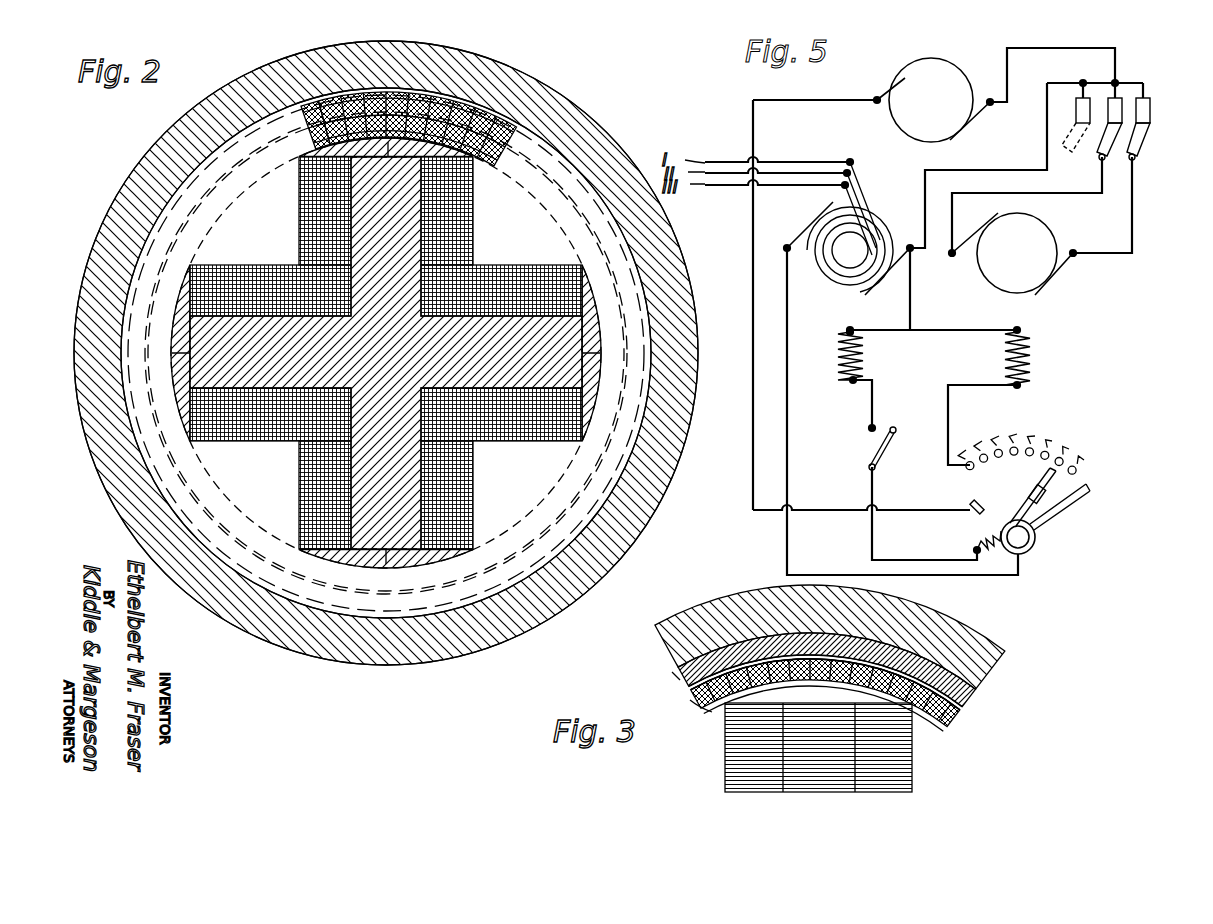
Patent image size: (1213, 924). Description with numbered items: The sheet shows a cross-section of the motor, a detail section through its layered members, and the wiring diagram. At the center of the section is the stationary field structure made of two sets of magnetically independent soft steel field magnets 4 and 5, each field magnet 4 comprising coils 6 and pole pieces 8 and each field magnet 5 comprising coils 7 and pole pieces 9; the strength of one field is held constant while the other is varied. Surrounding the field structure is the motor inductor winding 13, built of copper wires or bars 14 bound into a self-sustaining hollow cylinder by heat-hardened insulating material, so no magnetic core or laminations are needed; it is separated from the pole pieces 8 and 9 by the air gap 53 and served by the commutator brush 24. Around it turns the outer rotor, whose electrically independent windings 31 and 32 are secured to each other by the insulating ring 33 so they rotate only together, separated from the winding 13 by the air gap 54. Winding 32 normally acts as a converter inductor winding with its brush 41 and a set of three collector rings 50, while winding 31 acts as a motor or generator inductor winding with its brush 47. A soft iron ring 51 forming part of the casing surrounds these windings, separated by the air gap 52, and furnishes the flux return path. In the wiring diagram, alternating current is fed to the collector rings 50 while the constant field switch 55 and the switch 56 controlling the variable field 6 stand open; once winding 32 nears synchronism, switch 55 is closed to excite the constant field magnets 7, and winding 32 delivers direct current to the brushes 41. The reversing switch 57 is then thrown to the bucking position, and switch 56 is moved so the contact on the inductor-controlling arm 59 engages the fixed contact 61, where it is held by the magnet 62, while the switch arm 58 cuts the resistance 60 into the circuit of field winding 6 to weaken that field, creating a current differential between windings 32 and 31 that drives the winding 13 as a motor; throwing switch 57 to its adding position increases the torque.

In FIG. 2, the field magnet 4 is at (262, 327).
In FIG. 3, the field magnet 5 is at (726, 746).
In FIG. 2, the coils 6 is at (299, 200).
In FIG. 5, the coils 6 is at (1030, 360).
In FIG. 5, the coils 7 is at (836, 362).
In FIG. 3, the coils 7 is at (914, 744).
In FIG. 2, the pole pieces 8 is at (420, 150).
In FIG. 3, the pole pieces 9 is at (950, 698).
In FIG. 2, the motor inductor winding 13 is at (495, 130).
In FIG. 5, the motor inductor winding 13 is at (931, 100).
In FIG. 3, the motor inductor winding 13 is at (956, 684).
In FIG. 2, the copper wires or bars 14 is at (350, 113).
In FIG. 3, the copper wires or bars 14 is at (694, 700).
In FIG. 5, the commutator brush 24 is at (975, 112).
In FIG. 2, the inductor winding 31 is at (400, 126).
In FIG. 5, the inductor winding 31 is at (1048, 228).
In FIG. 5, the inductor winding 32 is at (862, 232).
In FIG. 3, the insulating ring 33 is at (672, 672).
In FIG. 5, the brush 41 is at (900, 276).
In FIG. 5, the brush 47 is at (1063, 270).
In FIG. 5, the collector rings 50 is at (842, 266).
In FIG. 2, the ring 51 is at (577, 114).
In FIG. 3, the ring 51 is at (722, 604).
In FIG. 2, the air gap 52 is at (472, 108).
In FIG. 3, the air gap 52 is at (945, 662).
In FIG. 2, the air gap 53 is at (413, 137).
In FIG. 3, the air gap 53 is at (904, 645).
In FIG. 2, the air gap 54 is at (367, 118).
In FIG. 3, the air gap 54 is at (950, 712).
In FIG. 5, the constant field switch 55 is at (892, 440).
In FIG. 5, the switch 56 is at (1030, 540).
In FIG. 5, the reversing switch 57 is at (1150, 140).
In FIG. 5, the switch arm 58 is at (1085, 498).
In FIG. 5, the inductor-controlling arm 59 is at (1036, 488).
In FIG. 5, the resistance 60 is at (1043, 446).
In FIG. 5, the fixed contact 61 is at (982, 502).
In FIG. 5, the magnet 62 is at (975, 538).